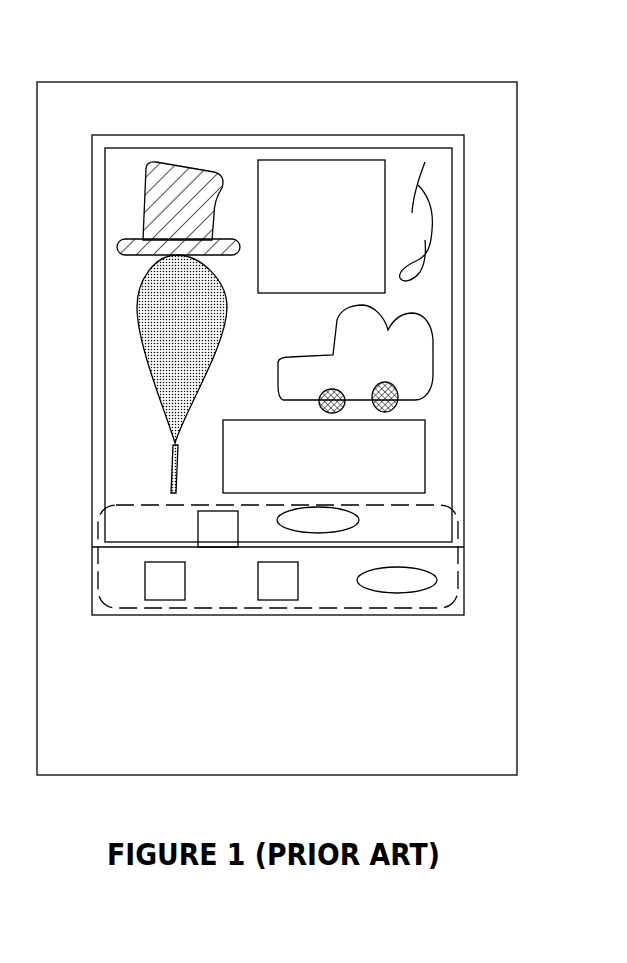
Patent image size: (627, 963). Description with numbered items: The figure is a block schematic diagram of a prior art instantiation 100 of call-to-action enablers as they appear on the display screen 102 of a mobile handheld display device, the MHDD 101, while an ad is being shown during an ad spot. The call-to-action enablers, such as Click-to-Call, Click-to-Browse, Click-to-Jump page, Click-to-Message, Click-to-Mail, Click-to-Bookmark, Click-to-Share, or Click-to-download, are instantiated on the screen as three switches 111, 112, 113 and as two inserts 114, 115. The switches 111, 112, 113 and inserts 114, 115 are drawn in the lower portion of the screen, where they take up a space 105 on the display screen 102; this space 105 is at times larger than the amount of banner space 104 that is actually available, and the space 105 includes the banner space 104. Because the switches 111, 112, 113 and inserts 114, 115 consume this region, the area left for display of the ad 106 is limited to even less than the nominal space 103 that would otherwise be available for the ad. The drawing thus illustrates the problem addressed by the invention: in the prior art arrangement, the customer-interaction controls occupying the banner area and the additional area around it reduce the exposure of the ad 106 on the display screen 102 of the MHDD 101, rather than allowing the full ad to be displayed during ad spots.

The prior art instantiation 100 is at (452, 56).
The MHDD 101 is at (518, 490).
The display screen 102 is at (464, 340).
The space 103 is at (452, 250).
The banner space 104 is at (460, 606).
The space 105 is at (440, 505).
The ad 106 is at (418, 185).
The switch 111 is at (185, 590).
The switch 112 is at (298, 590).
The switch 113 is at (223, 547).
The insert 114 is at (430, 588).
The insert 115 is at (313, 532).